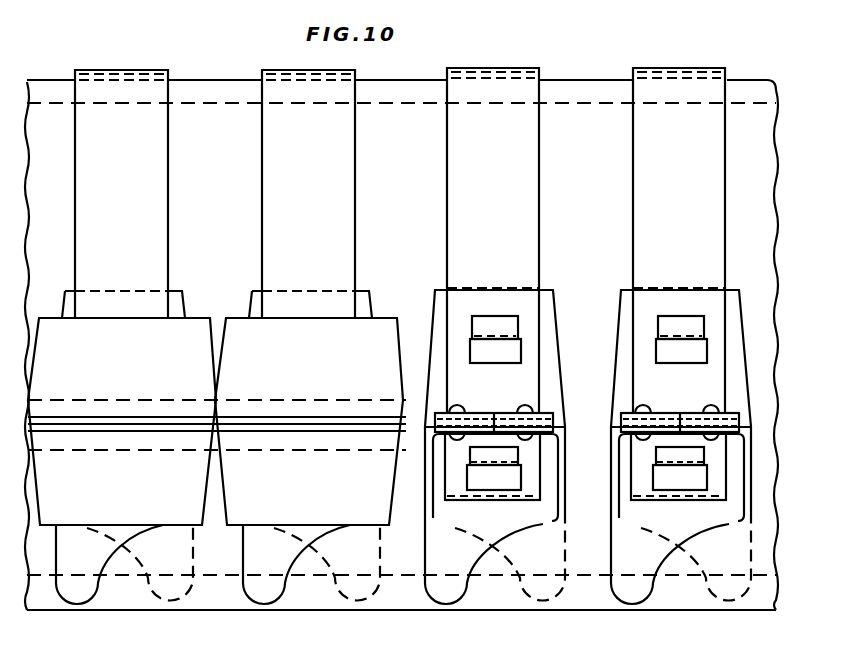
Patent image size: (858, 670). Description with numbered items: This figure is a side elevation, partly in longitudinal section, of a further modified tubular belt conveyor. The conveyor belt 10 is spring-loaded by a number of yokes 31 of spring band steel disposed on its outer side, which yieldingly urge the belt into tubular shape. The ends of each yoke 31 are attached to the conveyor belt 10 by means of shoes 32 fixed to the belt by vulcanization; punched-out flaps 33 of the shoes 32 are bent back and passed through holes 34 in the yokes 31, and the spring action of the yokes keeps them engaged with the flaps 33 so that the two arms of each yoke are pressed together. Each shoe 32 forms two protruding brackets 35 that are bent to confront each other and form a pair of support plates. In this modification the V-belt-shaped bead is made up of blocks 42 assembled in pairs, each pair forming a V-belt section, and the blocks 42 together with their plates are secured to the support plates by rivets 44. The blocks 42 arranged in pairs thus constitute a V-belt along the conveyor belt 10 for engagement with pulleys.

The conveyor belt 10 is at (770, 172).
The yoke 31 is at (533, 171).
The shoe 32 is at (653, 555).
The punched-out flap 33 is at (693, 322).
The hole 34 is at (700, 350).
The protruding bracket 35 is at (750, 473).
The block 42 is at (376, 338).
The rivet 44 is at (727, 400).